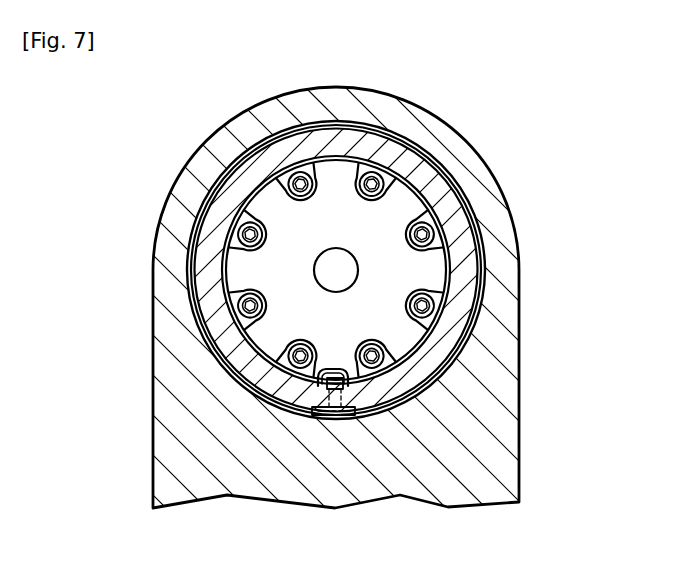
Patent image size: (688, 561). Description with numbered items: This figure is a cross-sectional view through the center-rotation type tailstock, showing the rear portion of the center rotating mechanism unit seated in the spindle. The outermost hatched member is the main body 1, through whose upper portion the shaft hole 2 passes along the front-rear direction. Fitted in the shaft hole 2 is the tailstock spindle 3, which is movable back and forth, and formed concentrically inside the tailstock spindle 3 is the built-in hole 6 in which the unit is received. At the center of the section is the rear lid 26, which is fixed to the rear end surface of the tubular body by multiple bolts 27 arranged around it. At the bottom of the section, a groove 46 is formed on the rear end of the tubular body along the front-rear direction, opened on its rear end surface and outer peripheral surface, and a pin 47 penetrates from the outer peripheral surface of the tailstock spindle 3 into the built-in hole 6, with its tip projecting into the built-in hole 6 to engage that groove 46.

The main body 1 is at (155, 340).
The shaft hole 2 is at (440, 203).
The tailstock spindle 3 is at (235, 188).
The built-in hole 6 is at (250, 271).
The rear lid 26 is at (391, 266).
The bolts 27 is at (352, 390).
The groove 46 is at (376, 383).
The pin 47 is at (322, 388).